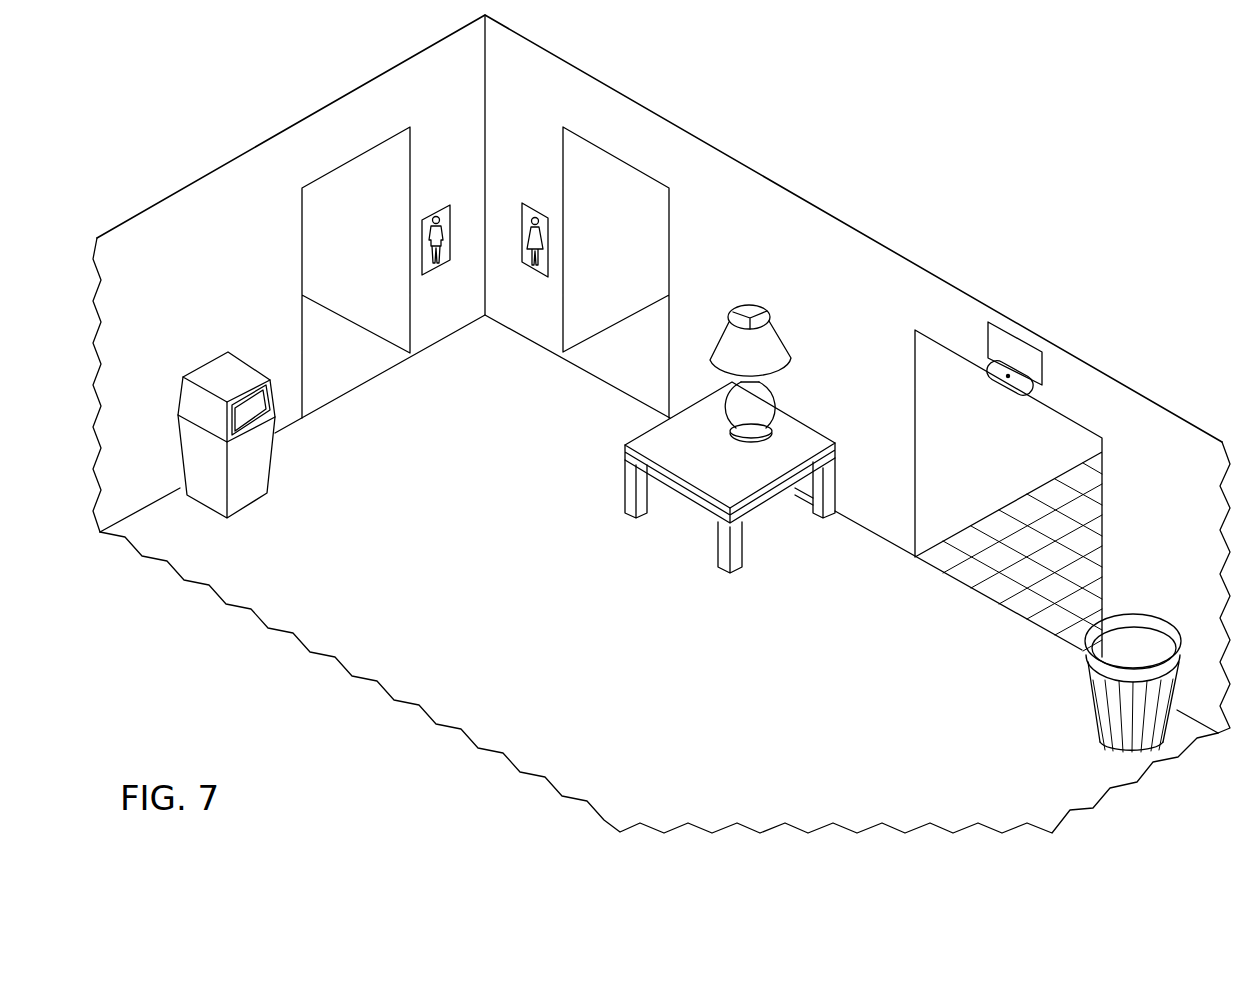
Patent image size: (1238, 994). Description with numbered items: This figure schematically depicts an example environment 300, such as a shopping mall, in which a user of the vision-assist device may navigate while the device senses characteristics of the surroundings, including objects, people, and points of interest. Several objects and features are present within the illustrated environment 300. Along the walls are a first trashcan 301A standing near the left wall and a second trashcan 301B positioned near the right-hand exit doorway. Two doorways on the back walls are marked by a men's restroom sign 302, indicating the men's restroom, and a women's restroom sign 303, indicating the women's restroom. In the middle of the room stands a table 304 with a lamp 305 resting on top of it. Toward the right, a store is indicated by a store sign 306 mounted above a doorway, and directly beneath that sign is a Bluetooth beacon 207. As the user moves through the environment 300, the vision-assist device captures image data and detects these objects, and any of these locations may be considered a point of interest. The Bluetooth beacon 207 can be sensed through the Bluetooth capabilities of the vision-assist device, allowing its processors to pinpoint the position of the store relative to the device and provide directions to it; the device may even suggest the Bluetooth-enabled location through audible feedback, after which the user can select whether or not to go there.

The environment 300 is at (213, 200).
The first trashcan 301A is at (208, 372).
The second trashcan 301B is at (1087, 695).
The men's restroom sign 302 is at (437, 197).
The women's restroom sign 303 is at (535, 198).
The table 304 is at (813, 420).
The lamp 305 is at (727, 300).
The store sign 306 is at (1023, 332).
The Bluetooth beacon 207 is at (1003, 390).